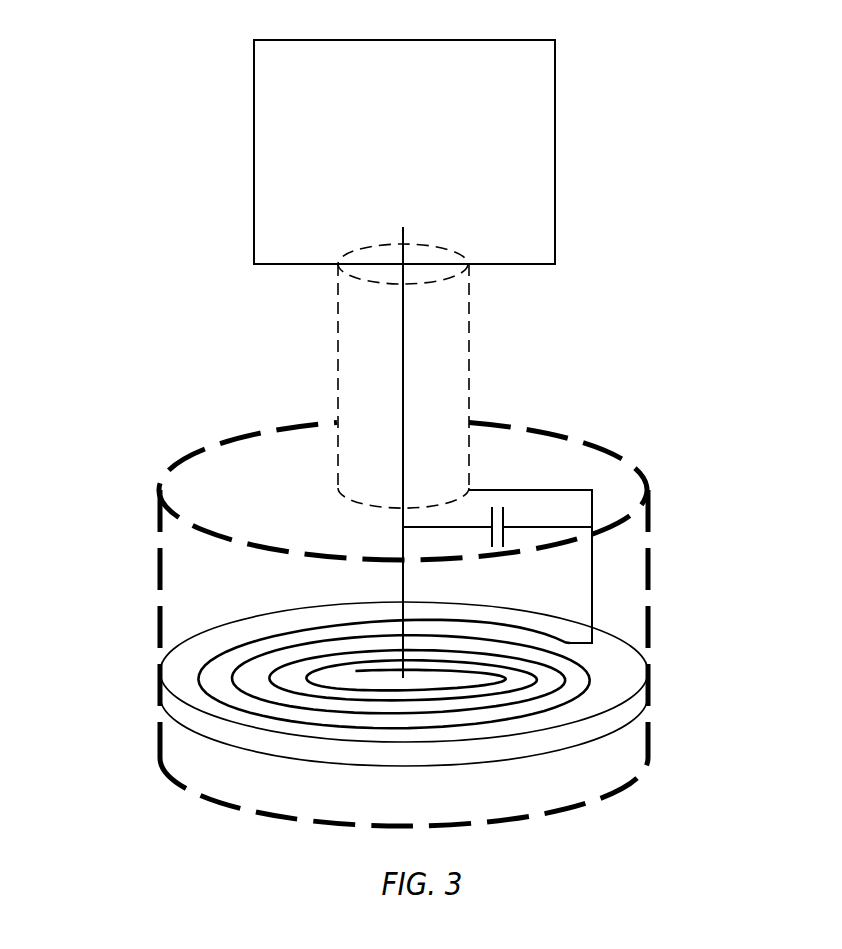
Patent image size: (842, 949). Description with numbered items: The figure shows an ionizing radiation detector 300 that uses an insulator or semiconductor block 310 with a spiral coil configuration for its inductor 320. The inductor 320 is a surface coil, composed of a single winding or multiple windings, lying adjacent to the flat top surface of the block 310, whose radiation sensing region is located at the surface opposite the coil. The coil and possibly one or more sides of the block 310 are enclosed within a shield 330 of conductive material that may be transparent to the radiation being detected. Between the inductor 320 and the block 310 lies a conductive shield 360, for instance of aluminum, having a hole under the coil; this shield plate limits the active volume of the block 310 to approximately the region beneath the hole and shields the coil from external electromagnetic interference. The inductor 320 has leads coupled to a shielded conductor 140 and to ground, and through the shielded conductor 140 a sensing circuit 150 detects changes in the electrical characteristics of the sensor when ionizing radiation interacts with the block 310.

The ionizing radiation detector 300 is at (156, 34).
The sensing circuit 150 is at (420, 178).
The shielded conductor 140 is at (470, 358).
The shield 330 is at (648, 545).
The inductor 320 is at (277, 633).
The conductive shield 360 is at (623, 718).
The semiconductor or insulator block 310 is at (425, 806).